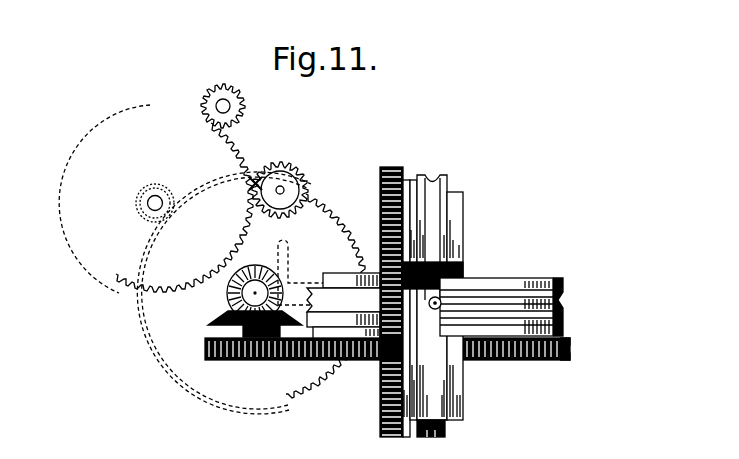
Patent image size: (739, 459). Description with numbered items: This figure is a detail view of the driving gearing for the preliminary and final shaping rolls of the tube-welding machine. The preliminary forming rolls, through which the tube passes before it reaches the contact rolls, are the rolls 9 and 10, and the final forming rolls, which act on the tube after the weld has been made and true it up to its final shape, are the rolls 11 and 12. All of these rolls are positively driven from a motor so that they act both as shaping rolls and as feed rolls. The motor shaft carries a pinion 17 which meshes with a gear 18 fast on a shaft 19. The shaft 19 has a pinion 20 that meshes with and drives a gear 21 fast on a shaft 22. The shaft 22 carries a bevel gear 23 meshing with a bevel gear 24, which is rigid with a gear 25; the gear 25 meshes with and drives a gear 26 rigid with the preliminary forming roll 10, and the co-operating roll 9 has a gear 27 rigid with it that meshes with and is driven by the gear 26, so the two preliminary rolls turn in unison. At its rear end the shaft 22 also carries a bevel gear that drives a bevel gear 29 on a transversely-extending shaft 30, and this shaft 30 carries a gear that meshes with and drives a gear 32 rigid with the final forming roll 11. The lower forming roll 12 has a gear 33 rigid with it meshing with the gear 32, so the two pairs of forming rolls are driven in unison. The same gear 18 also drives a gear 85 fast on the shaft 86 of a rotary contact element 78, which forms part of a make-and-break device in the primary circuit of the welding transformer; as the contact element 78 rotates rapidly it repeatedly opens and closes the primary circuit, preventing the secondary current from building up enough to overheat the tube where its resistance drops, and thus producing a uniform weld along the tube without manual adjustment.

The preliminary forming roll 9 is at (502, 296).
The preliminary forming roll 10 is at (345, 298).
The final forming roll 11 is at (440, 175).
The final forming roll 12 is at (431, 433).
The pinion 17 is at (219, 86).
The gear 18 is at (147, 100).
The shaft 19 is at (150, 207).
The pinion 20 is at (148, 205).
The gear 21 is at (310, 390).
The shaft 22 is at (228, 294).
The bevel gear 23 is at (245, 288).
The bevel gear 24 is at (232, 330).
The gear 25 is at (272, 362).
The gear 26 is at (362, 362).
The gear 27 is at (533, 362).
The bevel gear 29 is at (283, 247).
The transversely-extending shaft 30 is at (298, 290).
The gear 32 is at (391, 165).
The gear 33 is at (380, 424).
The rotary contact element 78 is at (257, 180).
The gear 85 is at (303, 180).
The shaft 86 is at (284, 196).